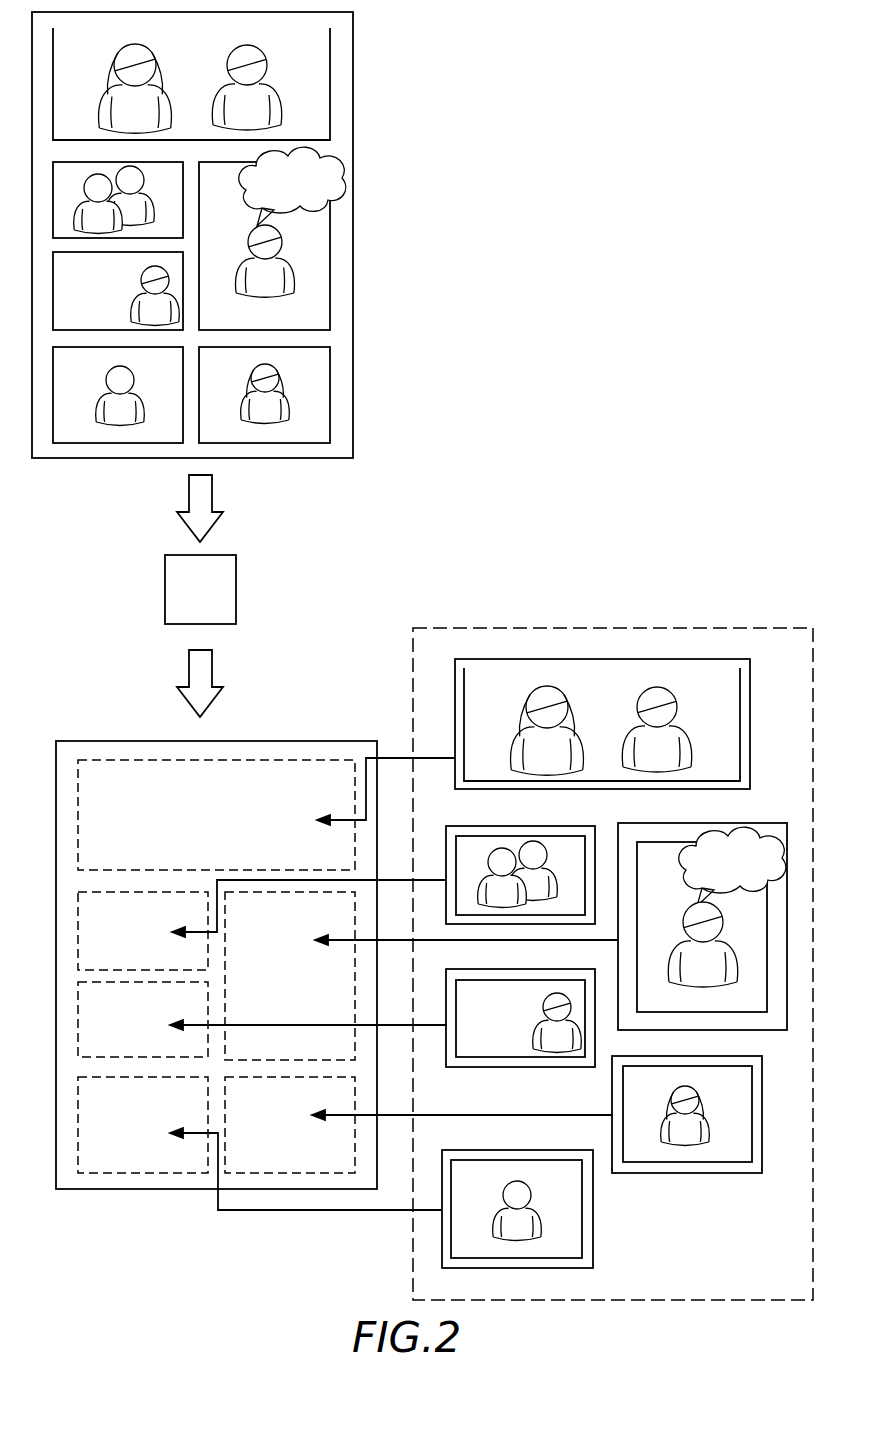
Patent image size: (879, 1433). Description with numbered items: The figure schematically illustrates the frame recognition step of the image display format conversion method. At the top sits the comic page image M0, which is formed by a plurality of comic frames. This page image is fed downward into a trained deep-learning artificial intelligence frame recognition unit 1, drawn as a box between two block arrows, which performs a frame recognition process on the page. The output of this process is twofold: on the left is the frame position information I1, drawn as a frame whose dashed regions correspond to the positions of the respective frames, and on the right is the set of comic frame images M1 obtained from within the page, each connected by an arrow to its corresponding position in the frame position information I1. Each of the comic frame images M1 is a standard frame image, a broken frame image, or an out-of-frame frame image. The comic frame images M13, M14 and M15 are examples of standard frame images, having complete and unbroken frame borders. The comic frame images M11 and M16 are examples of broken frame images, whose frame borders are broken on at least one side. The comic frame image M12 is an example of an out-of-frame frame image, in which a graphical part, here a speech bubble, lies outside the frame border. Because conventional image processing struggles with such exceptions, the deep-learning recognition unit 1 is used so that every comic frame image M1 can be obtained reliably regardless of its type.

The comic page image M0 is at (343, 253).
The frame recognition unit 1 is at (200, 589).
The frame position information I1 is at (320, 748).
The comic frame images M1 is at (603, 640).
The comic frame image M11 is at (711, 667).
The comic frame image M12 is at (768, 832).
The comic frame image M13 is at (512, 833).
The comic frame image M14 is at (498, 1060).
The comic frame image M15 is at (735, 1165).
The comic frame image M16 is at (587, 1240).